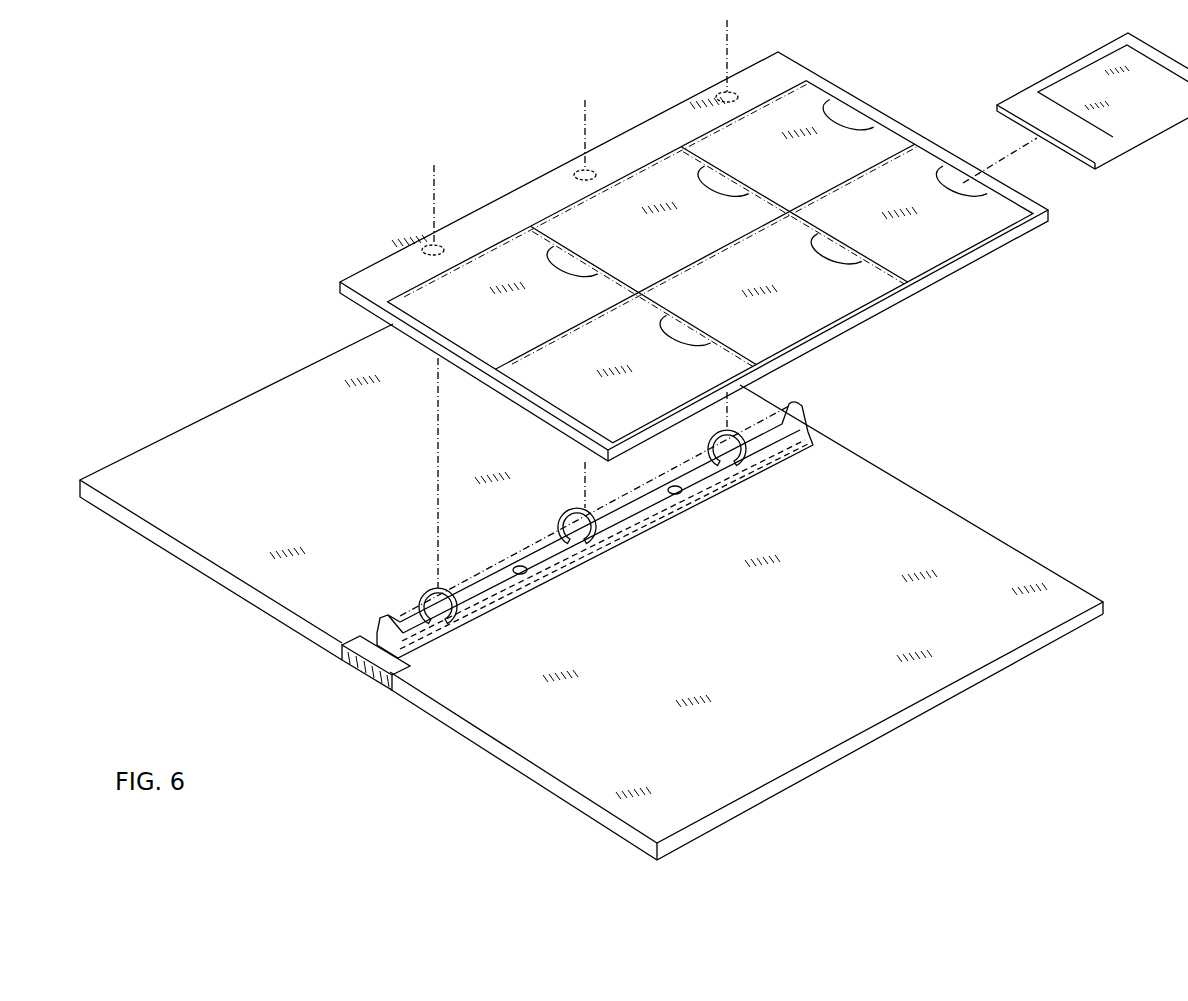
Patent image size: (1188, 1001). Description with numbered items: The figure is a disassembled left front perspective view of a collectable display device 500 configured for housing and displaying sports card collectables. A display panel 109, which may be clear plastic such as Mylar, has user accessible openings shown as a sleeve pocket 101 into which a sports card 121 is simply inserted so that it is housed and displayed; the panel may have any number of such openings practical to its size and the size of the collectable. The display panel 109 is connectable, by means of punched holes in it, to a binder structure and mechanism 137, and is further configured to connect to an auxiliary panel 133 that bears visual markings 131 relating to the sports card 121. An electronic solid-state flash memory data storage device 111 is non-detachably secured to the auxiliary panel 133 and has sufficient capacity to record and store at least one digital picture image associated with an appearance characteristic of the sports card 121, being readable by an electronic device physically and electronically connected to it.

The collectable display device 500 is at (333, 162).
The sleeve pocket 101 is at (958, 240).
The display panel 109 is at (857, 108).
The sports card 121 is at (1082, 63).
The visual markings 131 is at (226, 448).
The auxiliary panel 133 is at (312, 376).
The binder structure and mechanism 137 is at (808, 416).
The electronic solid-state flash memory data storage device 111 is at (357, 675).